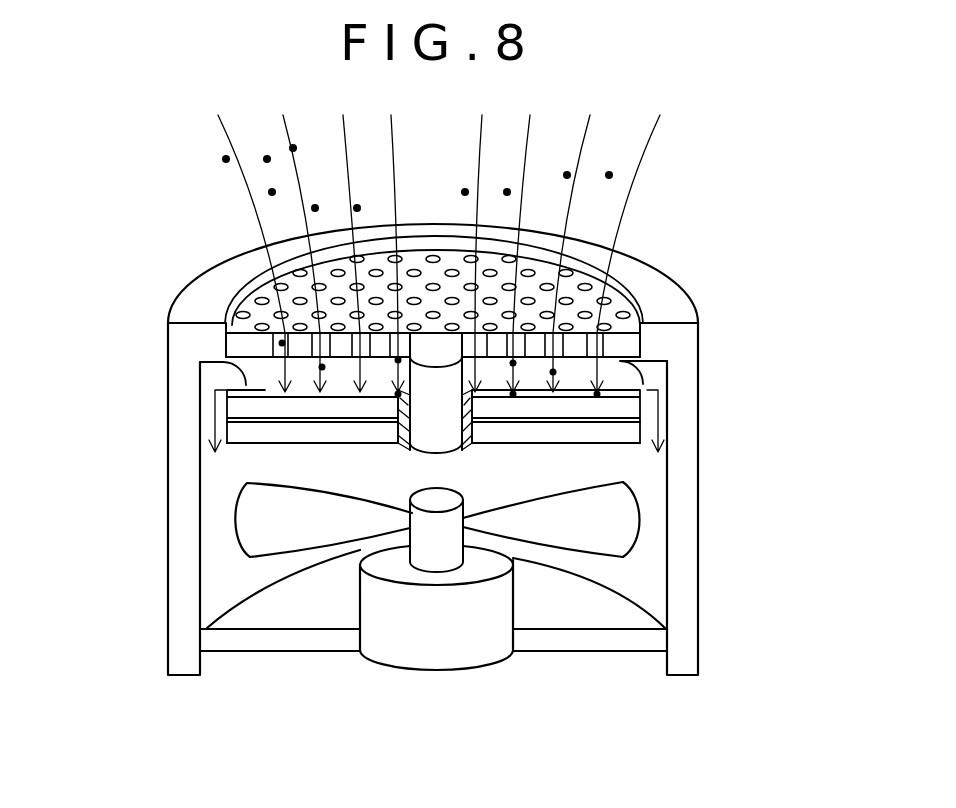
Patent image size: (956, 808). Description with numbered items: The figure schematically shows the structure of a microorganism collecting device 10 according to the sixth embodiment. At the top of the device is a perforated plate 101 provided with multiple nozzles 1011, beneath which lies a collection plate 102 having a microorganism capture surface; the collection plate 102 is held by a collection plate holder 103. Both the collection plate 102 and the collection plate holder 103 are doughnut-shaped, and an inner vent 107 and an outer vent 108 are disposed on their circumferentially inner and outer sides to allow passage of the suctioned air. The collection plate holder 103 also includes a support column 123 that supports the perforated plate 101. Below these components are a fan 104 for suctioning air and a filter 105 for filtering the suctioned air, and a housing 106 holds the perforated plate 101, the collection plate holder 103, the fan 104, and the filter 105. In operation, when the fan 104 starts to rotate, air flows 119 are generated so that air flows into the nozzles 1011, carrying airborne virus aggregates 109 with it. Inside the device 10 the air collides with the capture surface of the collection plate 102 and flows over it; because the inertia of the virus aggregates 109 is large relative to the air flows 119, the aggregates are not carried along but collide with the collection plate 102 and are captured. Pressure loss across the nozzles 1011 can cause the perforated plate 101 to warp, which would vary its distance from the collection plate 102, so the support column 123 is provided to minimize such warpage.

The microorganism collecting device 10 is at (227, 256).
The perforated plate 101 is at (617, 317).
The nozzles 1011 is at (248, 296).
The collection plate 102 is at (618, 355).
The collection plate holder 103 is at (618, 430).
The fan 104 is at (613, 527).
The filter 105 is at (624, 608).
The housing 106 is at (684, 362).
The inner vent 107 is at (387, 450).
The outer vent 108 is at (189, 430).
The virus aggregates 109 is at (609, 173).
The air flows 119 is at (630, 191).
The support column 123 is at (452, 452).